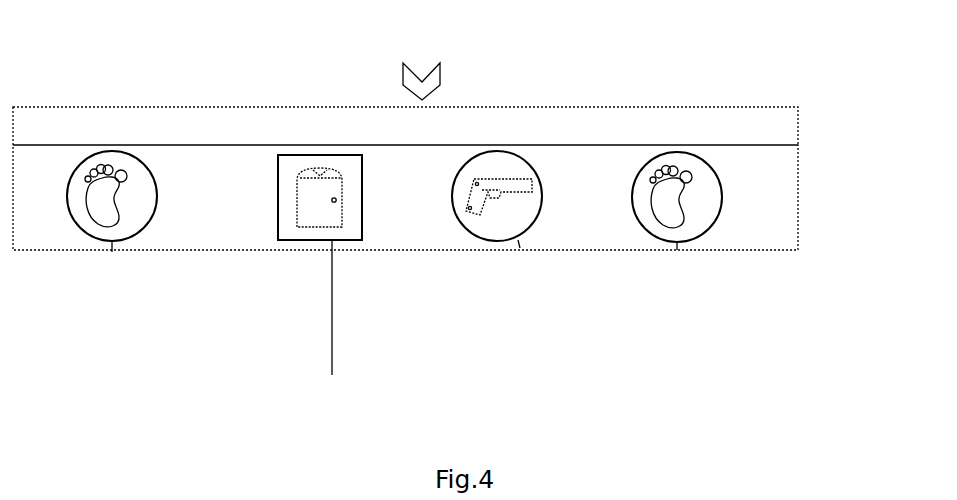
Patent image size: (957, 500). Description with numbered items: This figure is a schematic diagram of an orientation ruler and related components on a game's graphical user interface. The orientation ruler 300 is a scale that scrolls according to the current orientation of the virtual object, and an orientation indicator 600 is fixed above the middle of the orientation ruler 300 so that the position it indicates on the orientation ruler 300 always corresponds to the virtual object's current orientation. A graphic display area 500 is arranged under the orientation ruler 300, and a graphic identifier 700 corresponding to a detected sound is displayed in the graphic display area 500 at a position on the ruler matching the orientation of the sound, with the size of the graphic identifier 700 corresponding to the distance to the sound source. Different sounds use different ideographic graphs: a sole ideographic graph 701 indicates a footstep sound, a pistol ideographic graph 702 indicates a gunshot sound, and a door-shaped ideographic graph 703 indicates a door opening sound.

The orientation indicator 600 is at (440, 63).
The orientation ruler 300 is at (798, 123).
The graphic display area 500 is at (798, 210).
The graphic identifier 700 is at (677, 250).
The sole ideographic graph 701 is at (112, 252).
The pistol ideographic graph 702 is at (520, 248).
The door-shaped ideographic graph 703 is at (333, 252).